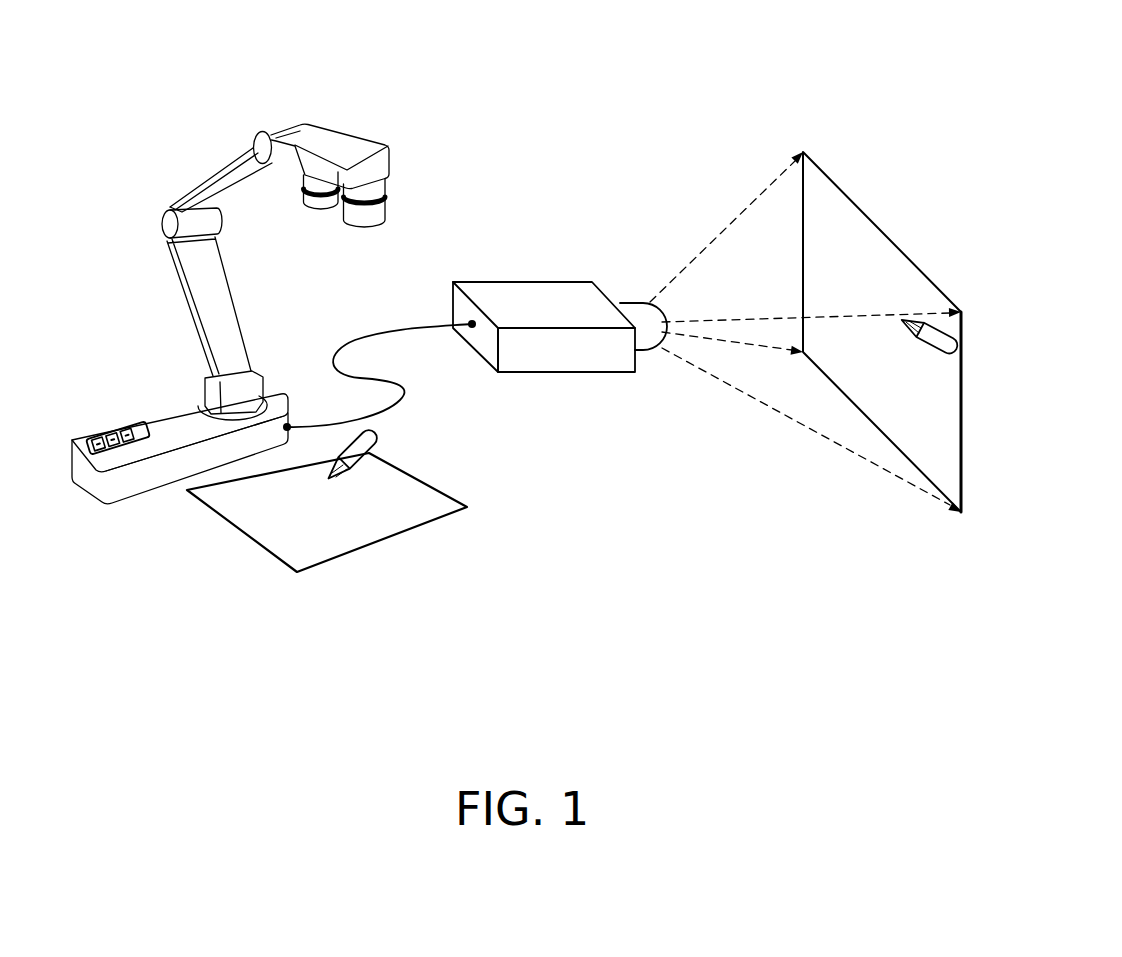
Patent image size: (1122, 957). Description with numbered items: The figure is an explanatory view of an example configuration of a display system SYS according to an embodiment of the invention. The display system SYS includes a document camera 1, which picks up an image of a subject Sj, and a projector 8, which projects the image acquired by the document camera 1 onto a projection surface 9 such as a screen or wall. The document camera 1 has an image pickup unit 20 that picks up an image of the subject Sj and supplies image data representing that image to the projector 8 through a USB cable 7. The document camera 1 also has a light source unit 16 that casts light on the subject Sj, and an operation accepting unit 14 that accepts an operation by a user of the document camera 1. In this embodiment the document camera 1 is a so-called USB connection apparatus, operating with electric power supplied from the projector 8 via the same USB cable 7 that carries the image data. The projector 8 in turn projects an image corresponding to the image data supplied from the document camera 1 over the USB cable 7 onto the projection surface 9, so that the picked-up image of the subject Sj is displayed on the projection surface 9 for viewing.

The display system SYS is at (980, 41).
The document camera 1 is at (164, 184).
The operation accepting unit 14 is at (122, 426).
The light source unit 16 is at (302, 207).
The image pickup unit 20 is at (388, 198).
The USB cable 7 is at (424, 388).
The projector 8 is at (612, 373).
The projection surface 9 is at (885, 230).
The subject Sj is at (505, 484).